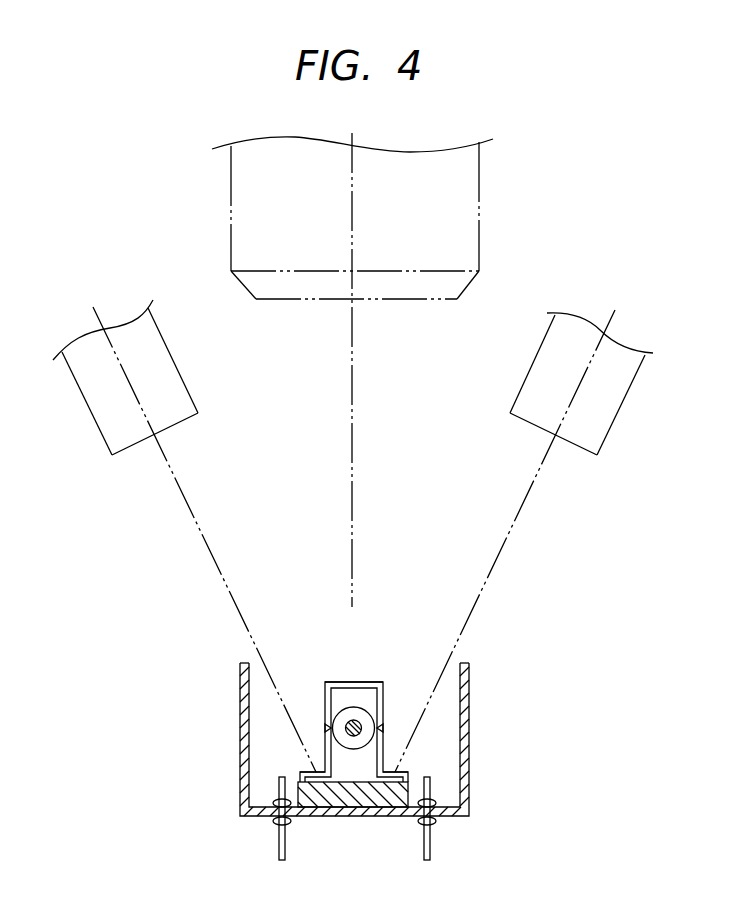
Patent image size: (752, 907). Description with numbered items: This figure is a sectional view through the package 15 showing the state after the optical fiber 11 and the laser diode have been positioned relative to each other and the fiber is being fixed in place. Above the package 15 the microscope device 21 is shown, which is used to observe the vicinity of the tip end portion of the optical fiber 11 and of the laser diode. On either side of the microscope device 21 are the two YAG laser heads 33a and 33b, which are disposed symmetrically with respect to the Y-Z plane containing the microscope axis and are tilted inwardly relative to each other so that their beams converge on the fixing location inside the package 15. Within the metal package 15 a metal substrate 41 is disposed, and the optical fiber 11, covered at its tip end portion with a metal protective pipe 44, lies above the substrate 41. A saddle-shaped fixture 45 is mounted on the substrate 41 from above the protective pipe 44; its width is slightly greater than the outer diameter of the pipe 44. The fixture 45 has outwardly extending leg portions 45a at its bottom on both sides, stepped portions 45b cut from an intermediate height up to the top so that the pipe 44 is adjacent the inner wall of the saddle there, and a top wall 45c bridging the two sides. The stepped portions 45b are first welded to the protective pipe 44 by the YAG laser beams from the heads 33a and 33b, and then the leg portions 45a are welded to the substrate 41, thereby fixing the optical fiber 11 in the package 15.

The microscope device 21 is at (479, 170).
The YAG laser head 33a is at (612, 427).
The YAG laser head 33b is at (100, 437).
The package 15 is at (469, 775).
The metal substrate 41 is at (393, 802).
The fixture 45 is at (370, 682).
The leg portions 45a is at (310, 772).
The stepped portions 45b is at (328, 726).
The bracket top wall 45c is at (343, 682).
The protective pipe 44 is at (349, 749).
The optical fiber 11 is at (353, 737).